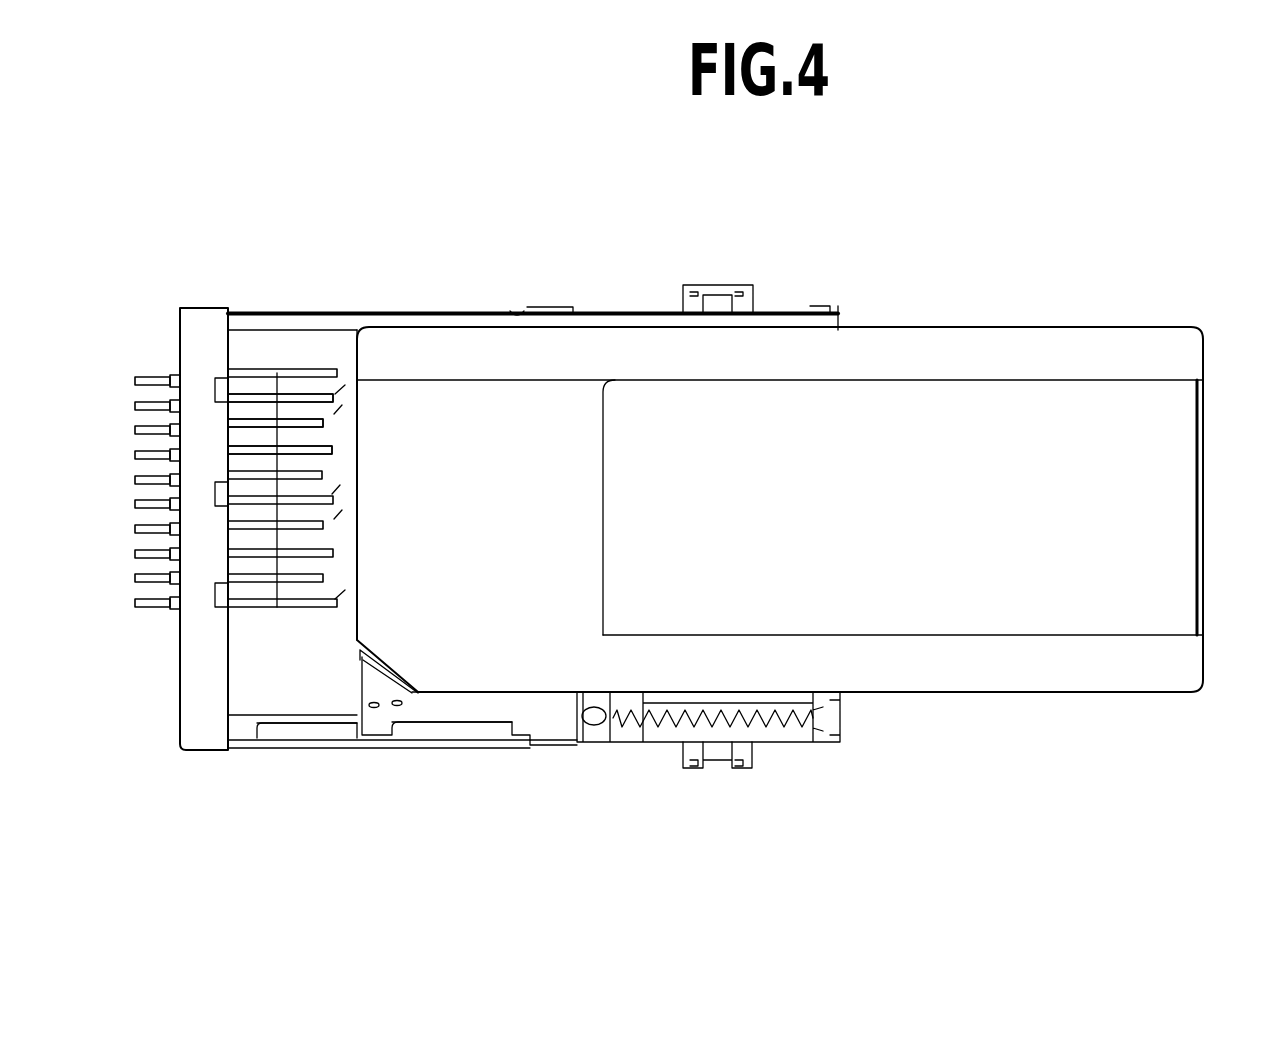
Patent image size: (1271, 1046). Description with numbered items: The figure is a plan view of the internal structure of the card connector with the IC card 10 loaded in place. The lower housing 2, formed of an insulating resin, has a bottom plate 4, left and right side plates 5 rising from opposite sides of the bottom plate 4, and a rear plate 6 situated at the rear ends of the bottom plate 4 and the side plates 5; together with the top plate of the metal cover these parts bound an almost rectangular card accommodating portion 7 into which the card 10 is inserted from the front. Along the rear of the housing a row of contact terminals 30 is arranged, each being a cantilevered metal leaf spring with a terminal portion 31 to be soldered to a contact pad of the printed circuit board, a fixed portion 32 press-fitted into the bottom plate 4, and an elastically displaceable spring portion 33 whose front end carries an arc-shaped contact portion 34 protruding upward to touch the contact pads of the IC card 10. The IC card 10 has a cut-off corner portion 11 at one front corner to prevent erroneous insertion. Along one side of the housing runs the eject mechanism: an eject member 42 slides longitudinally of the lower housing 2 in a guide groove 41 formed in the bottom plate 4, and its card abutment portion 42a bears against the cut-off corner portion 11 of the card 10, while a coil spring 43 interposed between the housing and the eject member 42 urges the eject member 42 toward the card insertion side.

The lower housing 2 is at (320, 352).
The bottom plate 4 is at (247, 697).
The side plates 5 is at (628, 318).
The rear plate 6 is at (193, 695).
The card accommodating portion 7 is at (303, 681).
The IC card 10 is at (1003, 345).
The cut-off corner portion 11 is at (413, 683).
The contact terminal 30 is at (253, 371).
The terminal portion 31 is at (143, 378).
The fixed portion 32 is at (178, 378).
The spring portion 33 is at (272, 402).
The contact portion 34 is at (325, 400).
The guide groove 41 is at (350, 725).
The eject member 42 is at (484, 712).
The card abutment portion 42a is at (370, 670).
The coil spring 43 is at (660, 743).